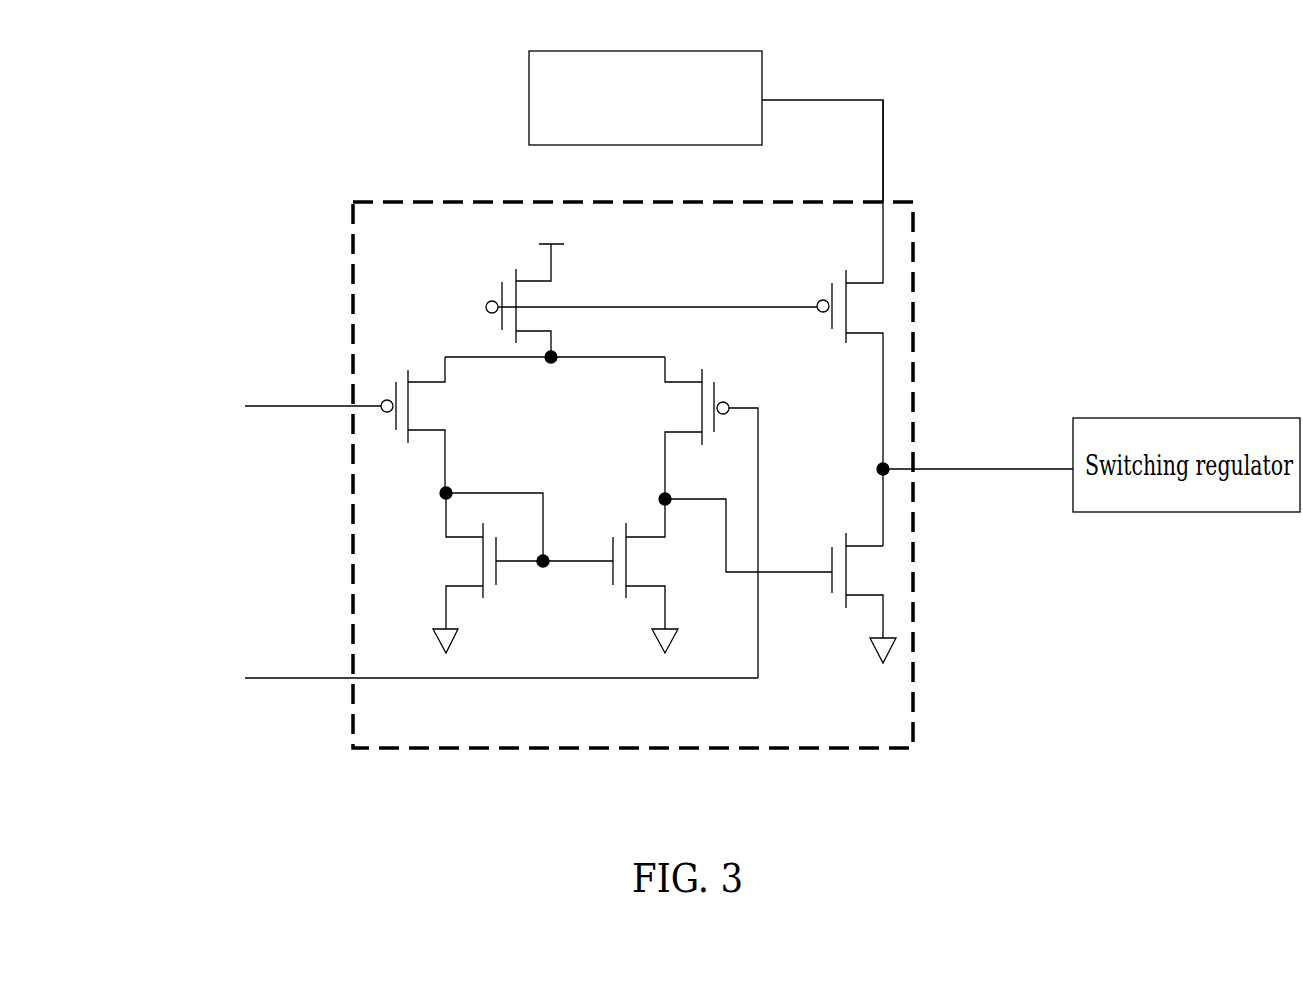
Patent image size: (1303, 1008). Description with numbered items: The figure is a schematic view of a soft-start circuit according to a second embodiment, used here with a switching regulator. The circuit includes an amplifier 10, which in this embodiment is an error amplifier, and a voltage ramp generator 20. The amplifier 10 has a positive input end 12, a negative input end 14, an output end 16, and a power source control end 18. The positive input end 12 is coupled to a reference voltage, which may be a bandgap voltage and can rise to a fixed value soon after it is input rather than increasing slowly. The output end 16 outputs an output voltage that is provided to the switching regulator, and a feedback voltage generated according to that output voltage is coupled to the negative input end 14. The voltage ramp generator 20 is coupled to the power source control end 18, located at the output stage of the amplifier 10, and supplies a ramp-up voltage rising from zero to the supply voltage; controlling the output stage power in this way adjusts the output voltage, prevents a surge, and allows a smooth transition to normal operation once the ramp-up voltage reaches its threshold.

The amplifier 10 is at (638, 750).
The positive input end 12 is at (352, 674).
The negative input end 14 is at (352, 404).
The output end 16 is at (917, 472).
The power source control end 18 is at (885, 203).
The voltage ramp generator 20 is at (663, 133).